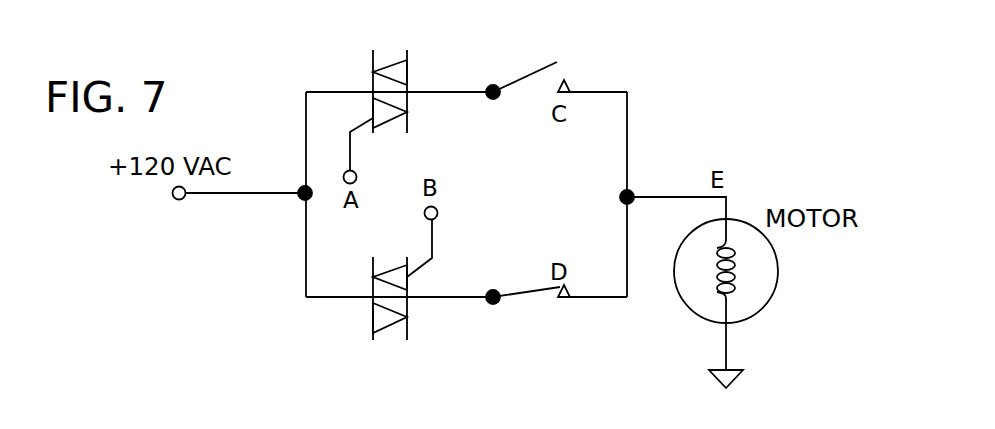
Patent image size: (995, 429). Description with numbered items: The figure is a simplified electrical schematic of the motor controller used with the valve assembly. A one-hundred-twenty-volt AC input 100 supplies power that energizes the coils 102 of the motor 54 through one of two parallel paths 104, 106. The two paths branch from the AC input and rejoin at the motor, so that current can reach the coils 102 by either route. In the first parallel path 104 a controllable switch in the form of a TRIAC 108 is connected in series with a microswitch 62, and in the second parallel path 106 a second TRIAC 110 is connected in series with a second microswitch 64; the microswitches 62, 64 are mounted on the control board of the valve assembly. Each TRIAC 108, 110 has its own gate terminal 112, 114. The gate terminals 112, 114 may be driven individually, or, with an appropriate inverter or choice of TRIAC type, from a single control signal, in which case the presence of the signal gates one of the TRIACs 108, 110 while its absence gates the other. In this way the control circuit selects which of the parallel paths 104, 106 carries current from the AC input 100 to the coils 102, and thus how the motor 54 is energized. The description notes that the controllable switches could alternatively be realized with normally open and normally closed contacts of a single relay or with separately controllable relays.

The motor 54 is at (760, 310).
The microswitch 62 is at (535, 68).
The microswitch 64 is at (533, 292).
The 120-volt AC input 100 is at (179, 200).
The coils 102 is at (715, 298).
The parallel path 104 is at (333, 82).
The parallel path 106 is at (330, 308).
The TRIAC 108 is at (407, 73).
The TRIAC 110 is at (407, 317).
The gate terminal 112 is at (350, 147).
The gate terminal 114 is at (432, 243).